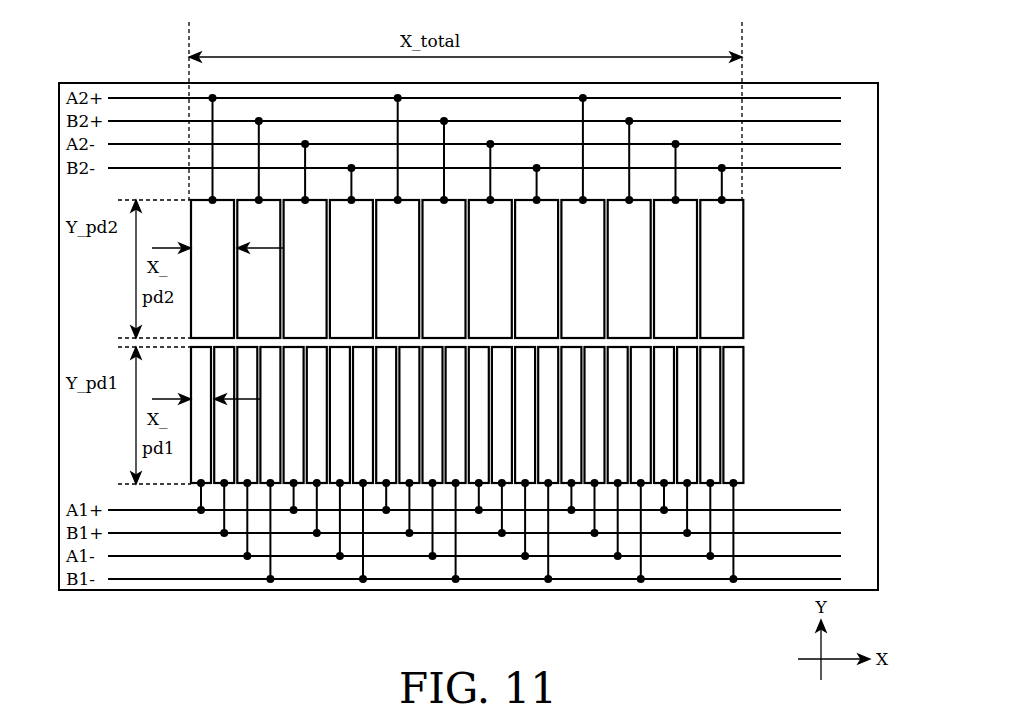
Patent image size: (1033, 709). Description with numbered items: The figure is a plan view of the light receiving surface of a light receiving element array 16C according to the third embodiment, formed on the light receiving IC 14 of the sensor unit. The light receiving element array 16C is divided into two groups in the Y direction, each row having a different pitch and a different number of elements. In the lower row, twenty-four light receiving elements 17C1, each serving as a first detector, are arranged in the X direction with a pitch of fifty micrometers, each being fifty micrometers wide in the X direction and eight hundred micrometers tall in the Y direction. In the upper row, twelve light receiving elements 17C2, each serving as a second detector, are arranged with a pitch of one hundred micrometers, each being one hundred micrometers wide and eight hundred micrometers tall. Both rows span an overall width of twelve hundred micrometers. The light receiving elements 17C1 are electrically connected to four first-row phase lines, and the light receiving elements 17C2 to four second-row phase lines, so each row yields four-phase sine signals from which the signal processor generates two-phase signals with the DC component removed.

The light receiving IC 14 is at (818, 83).
The light receiving element array 16C is at (743, 380).
The light receiving element 17C2 is at (729, 243).
The light receiving element 17C1 is at (739, 432).